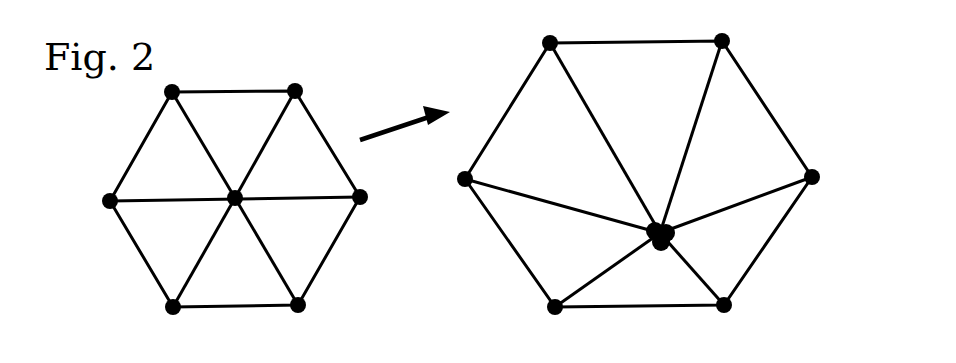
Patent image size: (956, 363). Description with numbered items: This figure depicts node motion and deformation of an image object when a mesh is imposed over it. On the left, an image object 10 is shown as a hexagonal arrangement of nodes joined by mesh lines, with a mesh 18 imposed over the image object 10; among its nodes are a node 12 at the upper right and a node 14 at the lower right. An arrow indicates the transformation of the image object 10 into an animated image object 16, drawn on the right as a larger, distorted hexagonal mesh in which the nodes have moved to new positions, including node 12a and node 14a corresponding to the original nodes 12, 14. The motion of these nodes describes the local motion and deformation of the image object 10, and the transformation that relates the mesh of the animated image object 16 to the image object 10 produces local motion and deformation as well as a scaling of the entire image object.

The image object 10 is at (95, 292).
The node 12 is at (300, 85).
The node 14 is at (302, 311).
The animated image object 16 is at (830, 74).
The node 12a is at (727, 35).
The node 14a is at (728, 311).
The mesh 18 is at (387, 137).